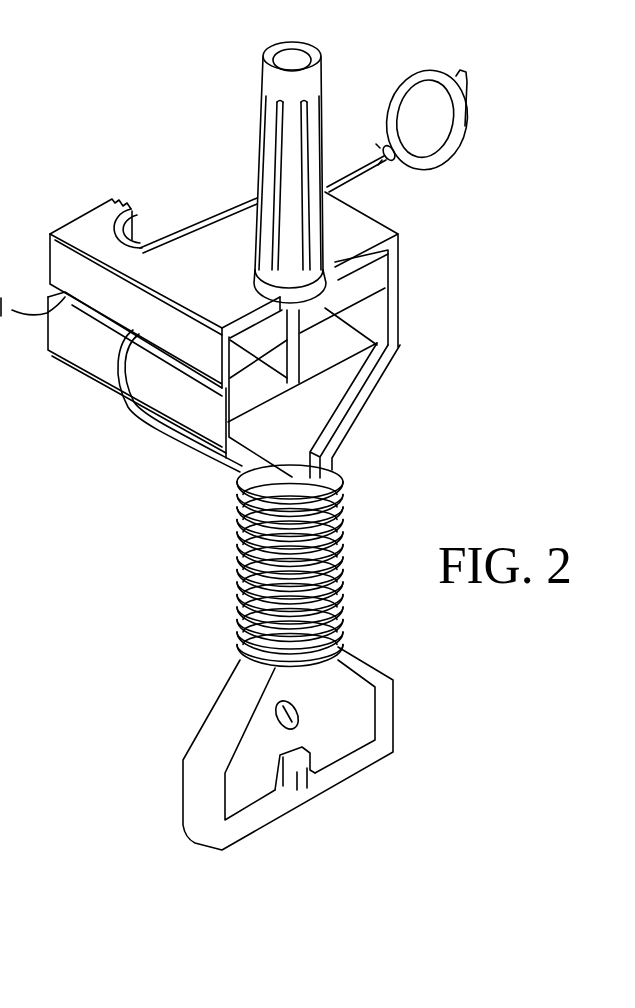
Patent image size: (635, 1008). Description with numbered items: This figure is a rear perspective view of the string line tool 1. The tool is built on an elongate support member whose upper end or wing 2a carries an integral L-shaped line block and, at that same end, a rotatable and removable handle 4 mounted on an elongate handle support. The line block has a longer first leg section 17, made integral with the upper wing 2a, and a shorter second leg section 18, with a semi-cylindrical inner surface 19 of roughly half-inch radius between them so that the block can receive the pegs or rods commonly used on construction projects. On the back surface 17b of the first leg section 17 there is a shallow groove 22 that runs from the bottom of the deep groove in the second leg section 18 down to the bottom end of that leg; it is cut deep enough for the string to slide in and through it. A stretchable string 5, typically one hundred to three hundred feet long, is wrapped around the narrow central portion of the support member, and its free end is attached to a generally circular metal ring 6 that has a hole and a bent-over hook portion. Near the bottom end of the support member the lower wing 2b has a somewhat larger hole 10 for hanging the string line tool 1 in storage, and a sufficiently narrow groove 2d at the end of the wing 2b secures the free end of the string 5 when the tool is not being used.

The string line tool 1 is at (113, 620).
The upper end or wing of the support member 2a is at (400, 316).
The wing at the bottom end of the support member 2b is at (400, 712).
The narrow groove 2d is at (303, 790).
The rotatable and removable handle 4 is at (270, 138).
The string 5 is at (345, 561).
The circular metal ring 6 is at (425, 72).
The hole 10 is at (282, 716).
The first leg section of the line block 17 is at (370, 230).
The back surface of the first leg section 17b is at (157, 430).
The second leg section of the line block 18 is at (92, 230).
The semi-cylindrical inner surface 19 is at (147, 245).
The shallow groove on the back surface 22 is at (175, 405).